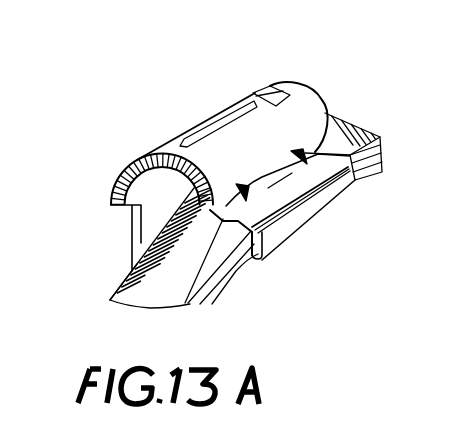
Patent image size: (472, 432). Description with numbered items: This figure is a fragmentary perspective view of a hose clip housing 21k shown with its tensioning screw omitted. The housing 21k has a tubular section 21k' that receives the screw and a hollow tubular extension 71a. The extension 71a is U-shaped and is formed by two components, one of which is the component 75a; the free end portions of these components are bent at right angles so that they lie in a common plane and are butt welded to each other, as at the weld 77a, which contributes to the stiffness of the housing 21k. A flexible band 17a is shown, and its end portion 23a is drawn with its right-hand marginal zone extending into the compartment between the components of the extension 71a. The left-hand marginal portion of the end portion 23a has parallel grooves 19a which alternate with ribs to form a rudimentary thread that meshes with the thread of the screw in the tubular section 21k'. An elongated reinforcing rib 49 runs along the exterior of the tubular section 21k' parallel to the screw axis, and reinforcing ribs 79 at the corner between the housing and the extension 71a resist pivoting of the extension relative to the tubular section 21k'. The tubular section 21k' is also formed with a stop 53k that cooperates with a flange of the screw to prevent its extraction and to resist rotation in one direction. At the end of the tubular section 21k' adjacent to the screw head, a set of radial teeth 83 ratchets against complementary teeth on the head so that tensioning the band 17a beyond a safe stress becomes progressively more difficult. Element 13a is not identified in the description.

The strap tongue 13a is at (234, 228).
The flexible band 17a is at (117, 291).
The grooves 19a is at (152, 265).
The housing 21k is at (253, 114).
The tubular section 21k' is at (155, 189).
The end portion 23a is at (168, 297).
The reinforcing rib 49 is at (222, 118).
The stop 53k is at (269, 97).
The hollow tubular extension 71a is at (338, 153).
The component 75a is at (260, 260).
The butt weld 77a is at (337, 194).
The reinforcing ribs 79 is at (294, 150).
The teeth 83 is at (117, 179).